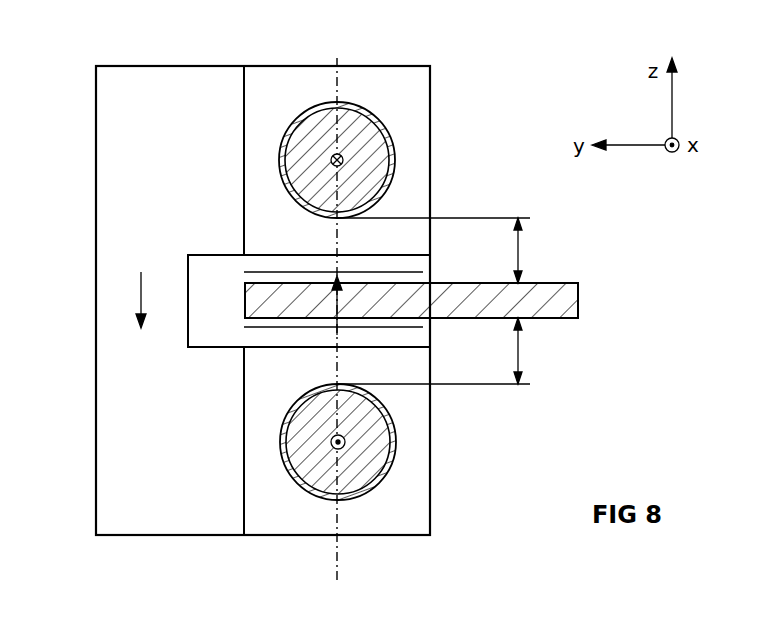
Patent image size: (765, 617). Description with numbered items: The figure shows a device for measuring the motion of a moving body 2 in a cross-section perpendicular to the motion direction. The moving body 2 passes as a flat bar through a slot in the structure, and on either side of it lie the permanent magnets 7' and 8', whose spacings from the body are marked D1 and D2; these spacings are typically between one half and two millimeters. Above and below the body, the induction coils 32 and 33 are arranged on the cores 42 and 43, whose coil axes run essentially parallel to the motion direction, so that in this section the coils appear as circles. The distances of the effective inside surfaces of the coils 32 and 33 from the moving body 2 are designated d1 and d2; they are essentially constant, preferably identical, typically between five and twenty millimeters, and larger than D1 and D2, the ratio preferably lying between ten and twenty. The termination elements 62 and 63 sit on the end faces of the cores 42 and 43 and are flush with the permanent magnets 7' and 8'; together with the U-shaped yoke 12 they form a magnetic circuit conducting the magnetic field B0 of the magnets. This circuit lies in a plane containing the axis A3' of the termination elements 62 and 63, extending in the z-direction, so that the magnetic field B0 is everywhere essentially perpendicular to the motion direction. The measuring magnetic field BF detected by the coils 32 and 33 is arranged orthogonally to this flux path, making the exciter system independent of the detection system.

The U-shaped yoke 12 is at (96, 133).
The termination element 62 is at (262, 88).
The termination element 63 is at (125, 471).
The coil core 42 is at (313, 128).
The induction coil 32 is at (383, 158).
The coil core 43 is at (306, 487).
The induction coil 33 is at (395, 438).
The permanent magnet 7' is at (361, 246).
The permanent magnet 8' is at (361, 354).
The spacing between permanent magnets D1 is at (420, 279).
The spacing between permanent magnets D2 is at (420, 323).
The moving body 2 is at (578, 300).
The distance of induction coil from moving body d1 is at (521, 245).
The distance of induction coil from moving body d2 is at (521, 350).
The measuring magnetic field BF is at (375, 127).
The magnetic field B0 is at (452, 404).
The axis of termination elements A3' is at (367, 320).